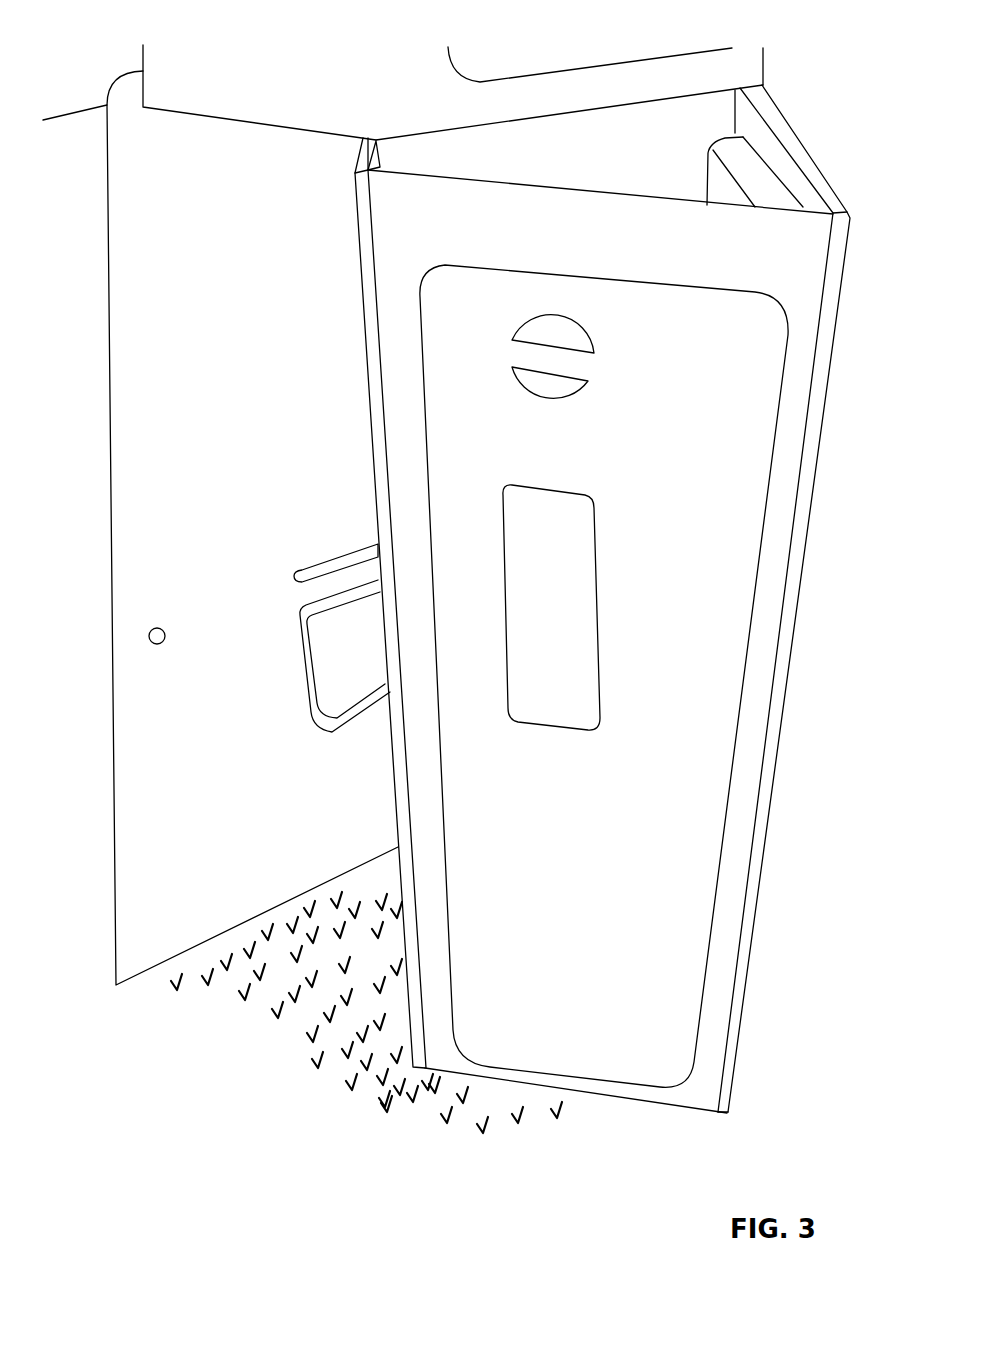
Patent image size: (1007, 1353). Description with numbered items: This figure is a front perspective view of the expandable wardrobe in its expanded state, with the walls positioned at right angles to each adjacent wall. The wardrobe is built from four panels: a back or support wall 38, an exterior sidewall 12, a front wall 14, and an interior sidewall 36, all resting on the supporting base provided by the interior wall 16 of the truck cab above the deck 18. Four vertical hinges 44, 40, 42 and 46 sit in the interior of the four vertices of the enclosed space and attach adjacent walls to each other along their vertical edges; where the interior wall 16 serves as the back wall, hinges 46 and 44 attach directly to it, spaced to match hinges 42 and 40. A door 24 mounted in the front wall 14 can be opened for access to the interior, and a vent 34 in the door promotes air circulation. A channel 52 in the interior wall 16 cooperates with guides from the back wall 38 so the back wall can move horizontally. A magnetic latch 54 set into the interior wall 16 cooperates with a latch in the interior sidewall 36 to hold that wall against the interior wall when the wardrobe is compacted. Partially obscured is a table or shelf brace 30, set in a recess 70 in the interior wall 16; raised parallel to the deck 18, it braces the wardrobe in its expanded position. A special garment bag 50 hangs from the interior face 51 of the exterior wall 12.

The exterior sidewall 12 is at (773, 120).
The front wall 14 is at (697, 1097).
The interior wall 16 is at (220, 515).
The deck 18 is at (317, 1005).
The door 24 is at (604, 676).
The shelf brace 30 is at (352, 687).
The vent 34 is at (572, 320).
The interior sidewall 36 is at (356, 218).
The back wall 38 is at (569, 107).
The vertical hinge 40 is at (838, 204).
The vertical hinge 42 is at (378, 173).
The vertical hinge 44 is at (735, 112).
The vertical hinge 46 is at (377, 140).
The garment bag 50 is at (748, 170).
The interior face 51 is at (793, 187).
The channel 52 is at (347, 553).
The magnetic latch 54 is at (164, 642).
The recess 70 is at (301, 606).